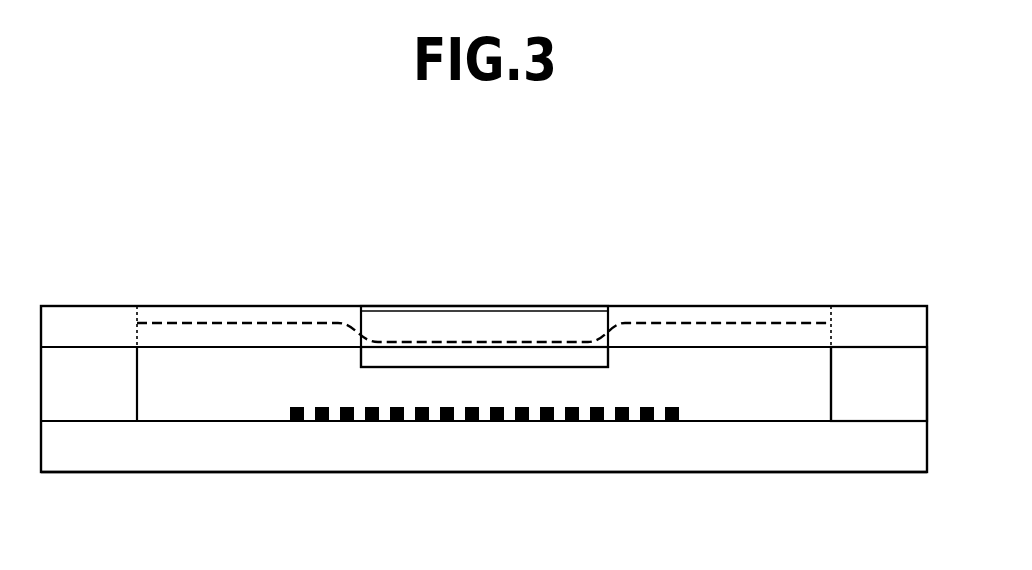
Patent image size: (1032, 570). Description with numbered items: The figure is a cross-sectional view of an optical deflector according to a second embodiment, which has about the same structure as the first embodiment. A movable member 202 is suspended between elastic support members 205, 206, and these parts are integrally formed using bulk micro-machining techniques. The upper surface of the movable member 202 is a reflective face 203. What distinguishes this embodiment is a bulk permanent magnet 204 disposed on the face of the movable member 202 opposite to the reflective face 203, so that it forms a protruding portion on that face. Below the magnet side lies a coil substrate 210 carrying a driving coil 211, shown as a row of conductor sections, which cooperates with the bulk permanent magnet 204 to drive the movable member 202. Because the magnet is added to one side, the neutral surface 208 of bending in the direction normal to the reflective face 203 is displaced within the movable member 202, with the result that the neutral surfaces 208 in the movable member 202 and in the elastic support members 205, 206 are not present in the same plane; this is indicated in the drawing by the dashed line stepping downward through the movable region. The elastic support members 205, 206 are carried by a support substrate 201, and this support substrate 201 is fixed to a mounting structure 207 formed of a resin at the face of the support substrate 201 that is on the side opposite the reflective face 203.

The support substrate 201 is at (867, 327).
The movable member 202 is at (507, 327).
The reflective face 203 is at (417, 307).
The bulk permanent magnet 204 is at (533, 357).
The elastic support member 205 is at (228, 306).
The elastic support member 206 is at (690, 306).
The mounting structure 207 is at (880, 377).
The neutral surface 208 is at (282, 318).
The coil substrate 210 is at (302, 444).
The driving coil 211 is at (675, 421).